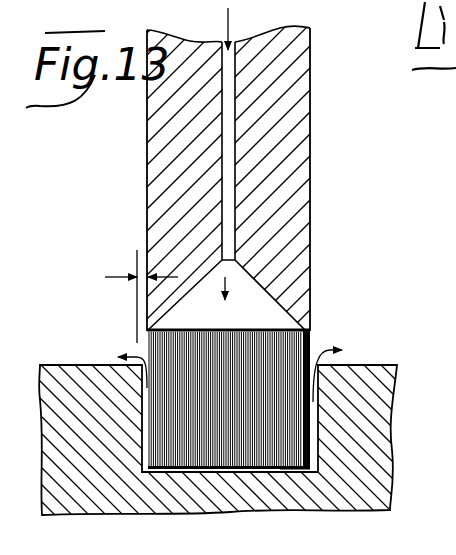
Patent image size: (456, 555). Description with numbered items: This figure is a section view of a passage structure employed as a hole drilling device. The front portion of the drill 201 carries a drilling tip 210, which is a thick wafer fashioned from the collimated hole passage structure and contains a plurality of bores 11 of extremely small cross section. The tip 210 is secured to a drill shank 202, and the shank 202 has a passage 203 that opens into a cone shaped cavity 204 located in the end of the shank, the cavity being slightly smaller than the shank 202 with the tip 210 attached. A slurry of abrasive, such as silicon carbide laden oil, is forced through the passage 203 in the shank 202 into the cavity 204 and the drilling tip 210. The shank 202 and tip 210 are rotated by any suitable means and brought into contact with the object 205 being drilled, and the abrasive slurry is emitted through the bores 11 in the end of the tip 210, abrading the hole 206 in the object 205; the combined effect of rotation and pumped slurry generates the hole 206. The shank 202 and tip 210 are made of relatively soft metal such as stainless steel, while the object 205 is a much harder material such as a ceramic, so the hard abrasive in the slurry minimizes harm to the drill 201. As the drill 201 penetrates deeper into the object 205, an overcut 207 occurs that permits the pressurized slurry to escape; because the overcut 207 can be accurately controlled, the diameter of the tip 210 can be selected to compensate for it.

The drill 201 is at (310, 113).
The drill shank 202 is at (300, 160).
The passage 203 is at (296, 213).
The cone shaped cavity 204 is at (250, 298).
The object 205 is at (372, 412).
The hole 206 is at (177, 474).
The overcut 207 is at (137, 268).
The drilling tip 210 is at (287, 353).
The bores 11 is at (297, 470).